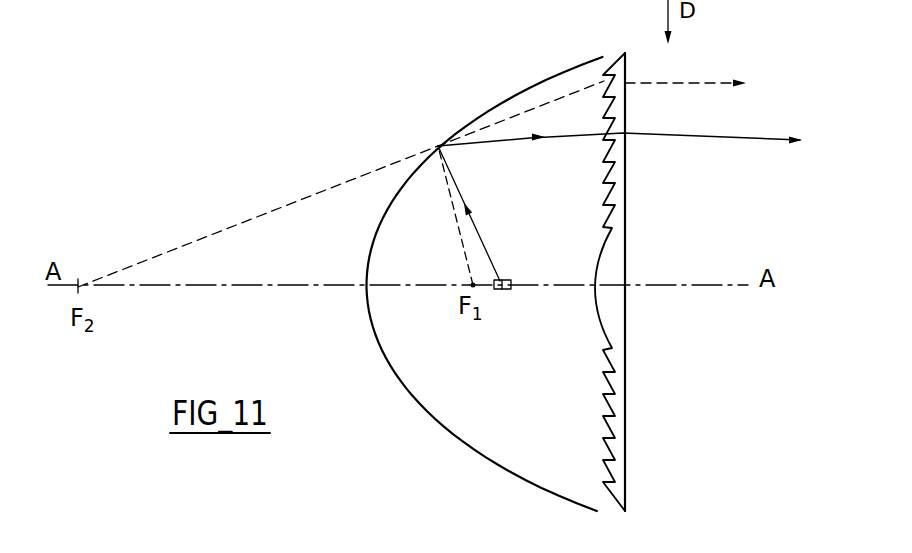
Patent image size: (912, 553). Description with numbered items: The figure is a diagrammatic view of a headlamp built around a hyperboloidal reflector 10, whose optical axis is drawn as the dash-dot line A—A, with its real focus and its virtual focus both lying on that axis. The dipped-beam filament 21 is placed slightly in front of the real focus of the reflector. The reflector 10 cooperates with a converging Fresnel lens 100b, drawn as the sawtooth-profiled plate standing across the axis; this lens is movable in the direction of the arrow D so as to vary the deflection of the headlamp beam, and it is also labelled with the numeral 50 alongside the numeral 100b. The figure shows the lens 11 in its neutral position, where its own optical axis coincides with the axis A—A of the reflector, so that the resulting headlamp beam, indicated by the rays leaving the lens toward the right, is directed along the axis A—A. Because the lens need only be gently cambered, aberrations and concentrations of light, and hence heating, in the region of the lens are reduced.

The hyperboloidal reflector 10 is at (370, 262).
The lens 11 is at (444, 417).
The dipped-beam filament 21 is at (507, 290).
The converging Fresnel lens 100b is at (612, 268).
The lens 50 is at (677, 282).